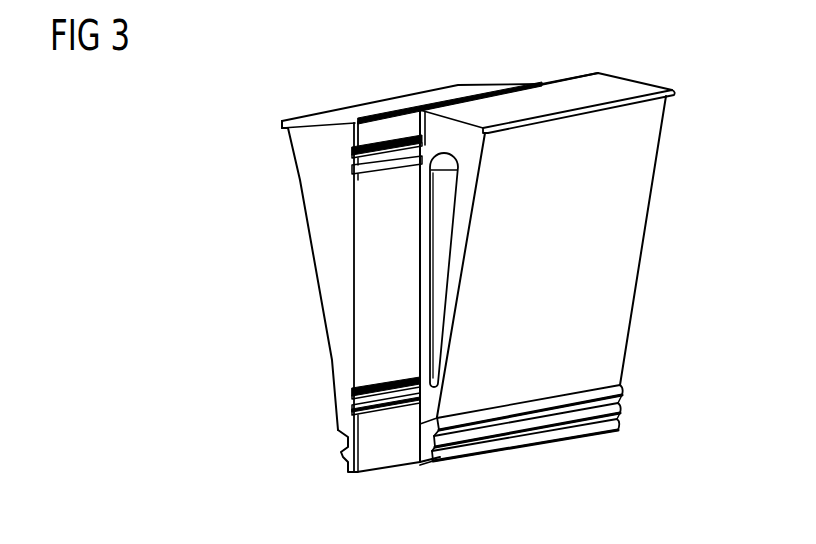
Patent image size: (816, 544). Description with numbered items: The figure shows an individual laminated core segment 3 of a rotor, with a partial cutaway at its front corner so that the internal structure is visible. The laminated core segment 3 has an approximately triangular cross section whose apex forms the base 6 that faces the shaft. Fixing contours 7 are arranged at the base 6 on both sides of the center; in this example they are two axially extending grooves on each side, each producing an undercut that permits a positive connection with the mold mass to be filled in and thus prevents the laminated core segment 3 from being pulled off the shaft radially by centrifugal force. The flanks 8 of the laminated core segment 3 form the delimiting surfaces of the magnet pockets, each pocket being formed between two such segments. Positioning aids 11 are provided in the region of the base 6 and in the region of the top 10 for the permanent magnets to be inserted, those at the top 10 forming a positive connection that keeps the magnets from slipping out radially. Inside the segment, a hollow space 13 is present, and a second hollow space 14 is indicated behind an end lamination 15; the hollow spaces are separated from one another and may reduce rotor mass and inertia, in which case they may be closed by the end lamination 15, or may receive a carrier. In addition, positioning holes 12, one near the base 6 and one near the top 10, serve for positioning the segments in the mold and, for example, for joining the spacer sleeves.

The laminated core segment 3 is at (375, 86).
The base 6 is at (312, 457).
The fixing contours 7 is at (334, 461).
The flanks 8 is at (313, 277).
The top 10 is at (272, 91).
The positioning aids 11 is at (282, 128).
The positioning holes 12 is at (375, 407).
The hollow space 13 is at (398, 278).
The second hollow space 14 is at (443, 213).
The end lamination 15 is at (317, 221).